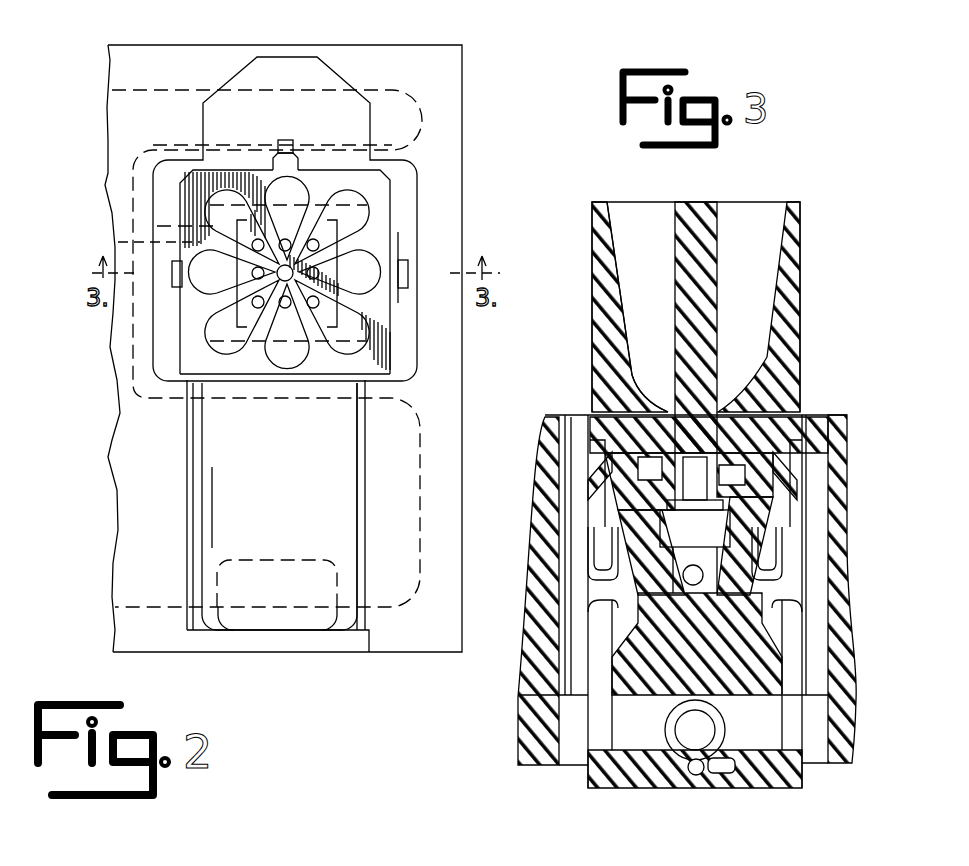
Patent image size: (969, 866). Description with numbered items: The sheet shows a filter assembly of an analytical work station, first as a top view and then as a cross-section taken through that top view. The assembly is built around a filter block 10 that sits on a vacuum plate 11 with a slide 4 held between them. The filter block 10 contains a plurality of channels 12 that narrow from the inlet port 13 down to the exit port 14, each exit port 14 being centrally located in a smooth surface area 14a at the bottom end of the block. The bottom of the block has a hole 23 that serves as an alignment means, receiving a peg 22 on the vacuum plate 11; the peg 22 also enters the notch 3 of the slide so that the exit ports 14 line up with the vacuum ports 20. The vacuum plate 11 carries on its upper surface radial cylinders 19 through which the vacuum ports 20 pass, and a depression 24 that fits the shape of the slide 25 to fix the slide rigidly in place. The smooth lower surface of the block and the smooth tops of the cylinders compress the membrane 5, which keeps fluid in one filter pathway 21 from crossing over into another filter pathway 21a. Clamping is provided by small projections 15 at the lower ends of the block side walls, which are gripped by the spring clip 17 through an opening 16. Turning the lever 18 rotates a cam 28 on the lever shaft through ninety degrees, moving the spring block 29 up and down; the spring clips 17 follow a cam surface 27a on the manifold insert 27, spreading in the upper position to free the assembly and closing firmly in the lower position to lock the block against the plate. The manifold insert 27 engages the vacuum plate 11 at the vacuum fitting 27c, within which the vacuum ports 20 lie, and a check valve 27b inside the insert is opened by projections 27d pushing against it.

In FIG. 2, the notch 3 is at (318, 138).
In FIG. 2, the slide 4 is at (214, 465).
In FIG. 3, the membrane 5 is at (718, 400).
In FIG. 2, the filter block 10 is at (379, 186).
In FIG. 3, the filter block 10 is at (590, 300).
In FIG. 2, the vacuum plate 11 is at (405, 203).
In FIG. 3, the vacuum plate 11 is at (797, 470).
In FIG. 2, the channels 12 is at (153, 251).
In FIG. 3, the channels 12 is at (633, 240).
In FIG. 2, the inlet port 13 is at (332, 275).
In FIG. 3, the inlet port 13 is at (640, 207).
In FIG. 2, the exit port 14 is at (374, 292).
In FIG. 3, the exit port 14 is at (668, 405).
In FIG. 2, the smooth surface area 14a is at (305, 305).
In FIG. 2, the projections 15 is at (408, 271).
In FIG. 3, the projections 15 is at (580, 512).
In FIG. 3, the opening 16 is at (613, 496).
In FIG. 3, the spring clip 17 is at (600, 547).
In FIG. 3, the lever 18 is at (727, 788).
In FIG. 3, the radial cylinders 19 is at (590, 420).
In FIG. 3, the vacuum ports 20 is at (768, 368).
In FIG. 3, the filter pathway 21 is at (600, 447).
In FIG. 3, the filter pathway 21a is at (823, 450).
In FIG. 2, the peg 22 is at (280, 149).
In FIG. 2, the hole 23 is at (290, 147).
In FIG. 2, the depression 24 is at (118, 242).
In FIG. 2, the slide shape 25 is at (250, 278).
In FIG. 3, the manifold insert 27 is at (605, 585).
In FIG. 3, the cam surface 27a is at (527, 625).
In FIG. 3, the check valve 27b is at (797, 530).
In FIG. 3, the vacuum fitting 27c is at (605, 475).
In FIG. 3, the projections 27d is at (827, 487).
In FIG. 3, the cam 28 is at (668, 789).
In FIG. 3, the spring block 29 is at (642, 788).